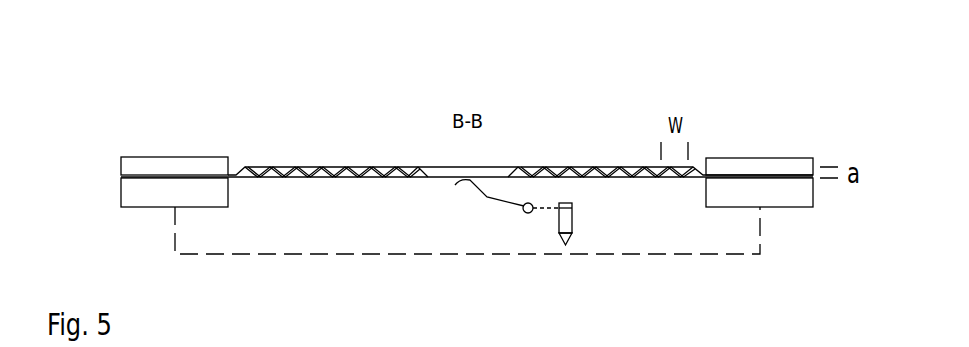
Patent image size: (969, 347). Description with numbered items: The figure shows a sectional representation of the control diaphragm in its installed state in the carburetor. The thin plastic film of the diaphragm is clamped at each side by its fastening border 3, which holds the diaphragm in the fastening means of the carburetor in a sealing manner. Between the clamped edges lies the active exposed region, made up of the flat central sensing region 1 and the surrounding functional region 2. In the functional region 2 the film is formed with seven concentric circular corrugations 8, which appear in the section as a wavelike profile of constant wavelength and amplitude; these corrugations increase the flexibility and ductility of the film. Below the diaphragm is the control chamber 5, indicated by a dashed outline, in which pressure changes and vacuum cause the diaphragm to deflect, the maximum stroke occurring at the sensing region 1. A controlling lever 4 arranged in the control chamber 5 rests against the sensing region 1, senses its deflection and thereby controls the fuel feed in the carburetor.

The sensing region 1 is at (433, 155).
The functional region 2 is at (310, 145).
The fastening border 3 is at (185, 175).
The controlling lever 4 is at (472, 178).
The control chamber 5 is at (320, 215).
The circular corrugations 8 is at (597, 167).